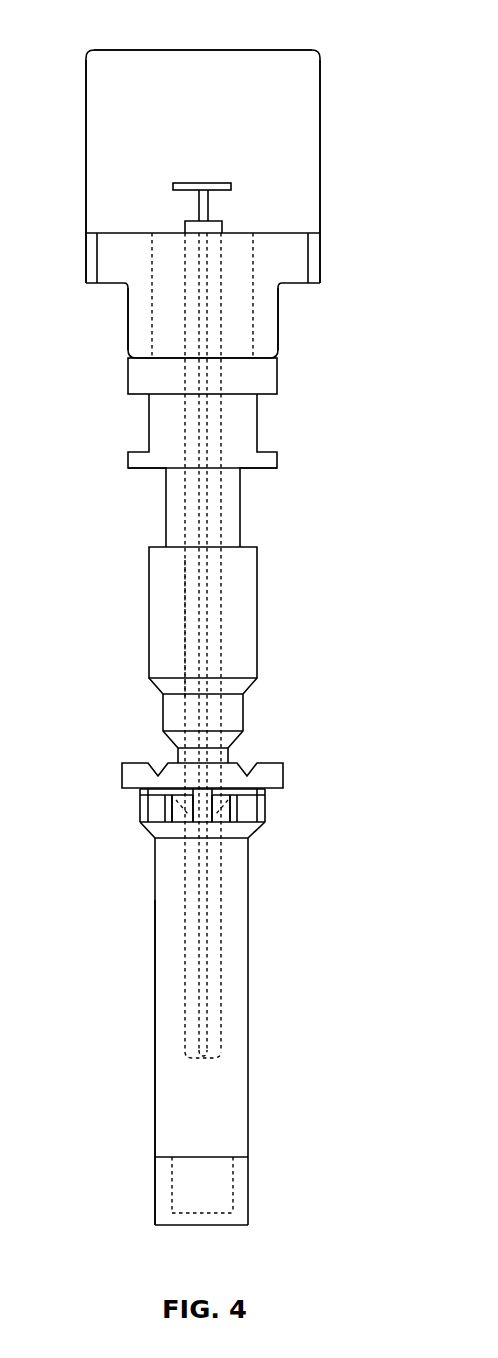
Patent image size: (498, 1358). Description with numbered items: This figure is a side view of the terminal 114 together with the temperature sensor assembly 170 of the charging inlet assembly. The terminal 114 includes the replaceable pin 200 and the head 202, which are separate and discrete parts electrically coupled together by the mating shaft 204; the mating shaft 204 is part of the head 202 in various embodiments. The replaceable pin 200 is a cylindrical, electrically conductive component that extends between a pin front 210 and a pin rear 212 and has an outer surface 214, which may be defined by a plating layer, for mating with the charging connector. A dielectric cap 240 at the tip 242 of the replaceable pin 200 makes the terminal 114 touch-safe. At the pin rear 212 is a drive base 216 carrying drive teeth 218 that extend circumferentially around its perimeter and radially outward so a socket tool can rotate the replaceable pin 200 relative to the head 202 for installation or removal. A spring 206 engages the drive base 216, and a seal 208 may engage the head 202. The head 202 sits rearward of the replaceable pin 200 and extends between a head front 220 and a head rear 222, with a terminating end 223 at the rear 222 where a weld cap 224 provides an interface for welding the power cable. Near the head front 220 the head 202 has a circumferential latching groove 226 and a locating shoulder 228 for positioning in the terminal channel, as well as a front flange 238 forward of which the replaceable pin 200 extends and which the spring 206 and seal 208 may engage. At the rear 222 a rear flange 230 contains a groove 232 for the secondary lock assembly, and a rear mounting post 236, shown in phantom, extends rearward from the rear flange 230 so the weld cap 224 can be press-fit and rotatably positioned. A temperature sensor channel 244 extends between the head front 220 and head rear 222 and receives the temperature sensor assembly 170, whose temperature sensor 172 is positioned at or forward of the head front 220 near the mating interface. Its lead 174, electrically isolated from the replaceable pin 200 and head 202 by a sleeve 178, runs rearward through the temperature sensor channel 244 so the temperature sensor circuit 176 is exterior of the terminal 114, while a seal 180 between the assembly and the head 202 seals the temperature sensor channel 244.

The terminal 114 is at (359, 184).
The temperature sensor assembly 170 is at (194, 183).
The temperature sensor 172 is at (203, 1058).
The lead 174 is at (198, 587).
The temperature sensor circuit 176 is at (217, 183).
The sleeve 178 is at (183, 635).
The seal 180 is at (183, 225).
The replaceable pin 200 is at (237, 1025).
The head 202 is at (243, 610).
The mating shaft 204 is at (185, 942).
The spring 206 is at (236, 794).
The seal 208 is at (265, 792).
The pin front 210 is at (230, 1225).
The pin rear 212 is at (152, 793).
The outer surface 214 is at (155, 1123).
The drive base 216 is at (143, 818).
The drive teeth 218 is at (188, 808).
The head front 220 is at (228, 792).
The head rear 222 is at (263, 50).
The terminating end 223 is at (164, 50).
The weld cap 224 is at (113, 155).
The latching groove 226 is at (249, 763).
The locating shoulder 228 is at (248, 681).
The rear flange 230 is at (277, 376).
The groove 232 is at (269, 423).
The rear mounting post 236 is at (163, 318).
The front flange 238 is at (133, 778).
The cap 240 is at (240, 1173).
The tip 242 is at (205, 1213).
The temperature sensor channel 244 is at (209, 266).